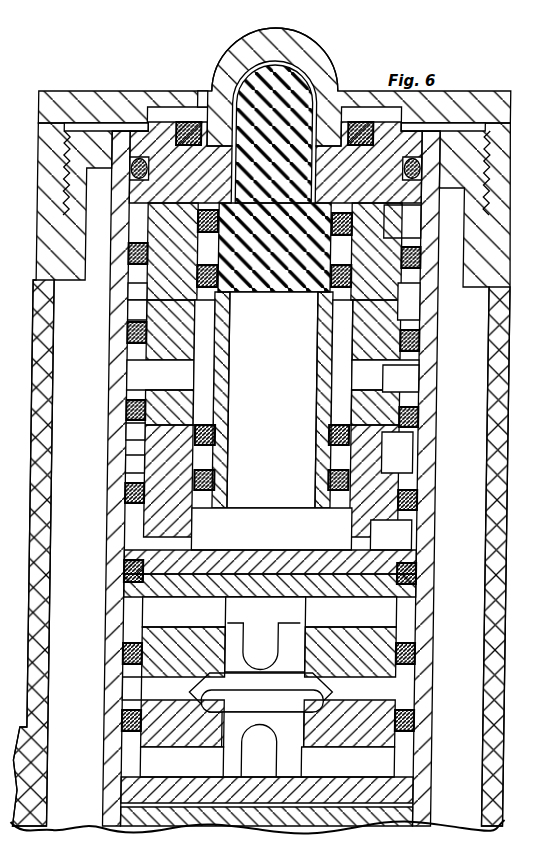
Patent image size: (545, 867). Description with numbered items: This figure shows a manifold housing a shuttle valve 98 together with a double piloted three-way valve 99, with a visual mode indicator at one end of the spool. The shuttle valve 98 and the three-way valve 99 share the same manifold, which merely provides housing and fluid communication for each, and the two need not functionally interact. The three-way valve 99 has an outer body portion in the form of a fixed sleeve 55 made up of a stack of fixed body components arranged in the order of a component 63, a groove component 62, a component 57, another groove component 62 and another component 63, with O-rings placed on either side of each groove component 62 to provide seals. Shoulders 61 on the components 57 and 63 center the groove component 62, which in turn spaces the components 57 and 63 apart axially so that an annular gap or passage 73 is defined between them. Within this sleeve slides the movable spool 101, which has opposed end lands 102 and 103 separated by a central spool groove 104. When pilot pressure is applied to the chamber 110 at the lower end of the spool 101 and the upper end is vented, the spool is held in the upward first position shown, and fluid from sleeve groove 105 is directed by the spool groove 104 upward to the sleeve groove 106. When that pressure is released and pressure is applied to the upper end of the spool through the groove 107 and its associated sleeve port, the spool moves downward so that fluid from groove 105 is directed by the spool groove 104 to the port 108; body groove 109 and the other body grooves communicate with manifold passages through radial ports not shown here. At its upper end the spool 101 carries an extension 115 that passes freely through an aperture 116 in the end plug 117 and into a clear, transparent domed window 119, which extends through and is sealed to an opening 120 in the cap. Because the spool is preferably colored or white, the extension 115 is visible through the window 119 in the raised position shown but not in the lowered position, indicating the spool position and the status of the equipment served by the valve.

The fixed sleeve 55 is at (148, 528).
The body component 57 is at (128, 356).
The shoulders 61 is at (128, 310).
The groove component 62 is at (130, 288).
The body component 63 is at (150, 238).
The annular gap or passage 73 is at (328, 327).
The shuttle valve 98 is at (130, 690).
The three-way valve 99 is at (133, 396).
The spool 101 is at (277, 257).
The end land 102 is at (242, 270).
The end land 103 is at (222, 460).
The spool groove 104 is at (205, 362).
The sleeve groove 105 is at (409, 380).
The sleeve groove 106 is at (413, 302).
The groove 107 is at (377, 180).
The port 108 is at (405, 465).
The body groove 109 is at (396, 537).
The chamber 110 is at (271, 529).
The spool extension 115 is at (248, 74).
The aperture 116 is at (332, 82).
The end plug 117 is at (147, 122).
The window 119 is at (243, 46).
The opening 120 is at (200, 92).